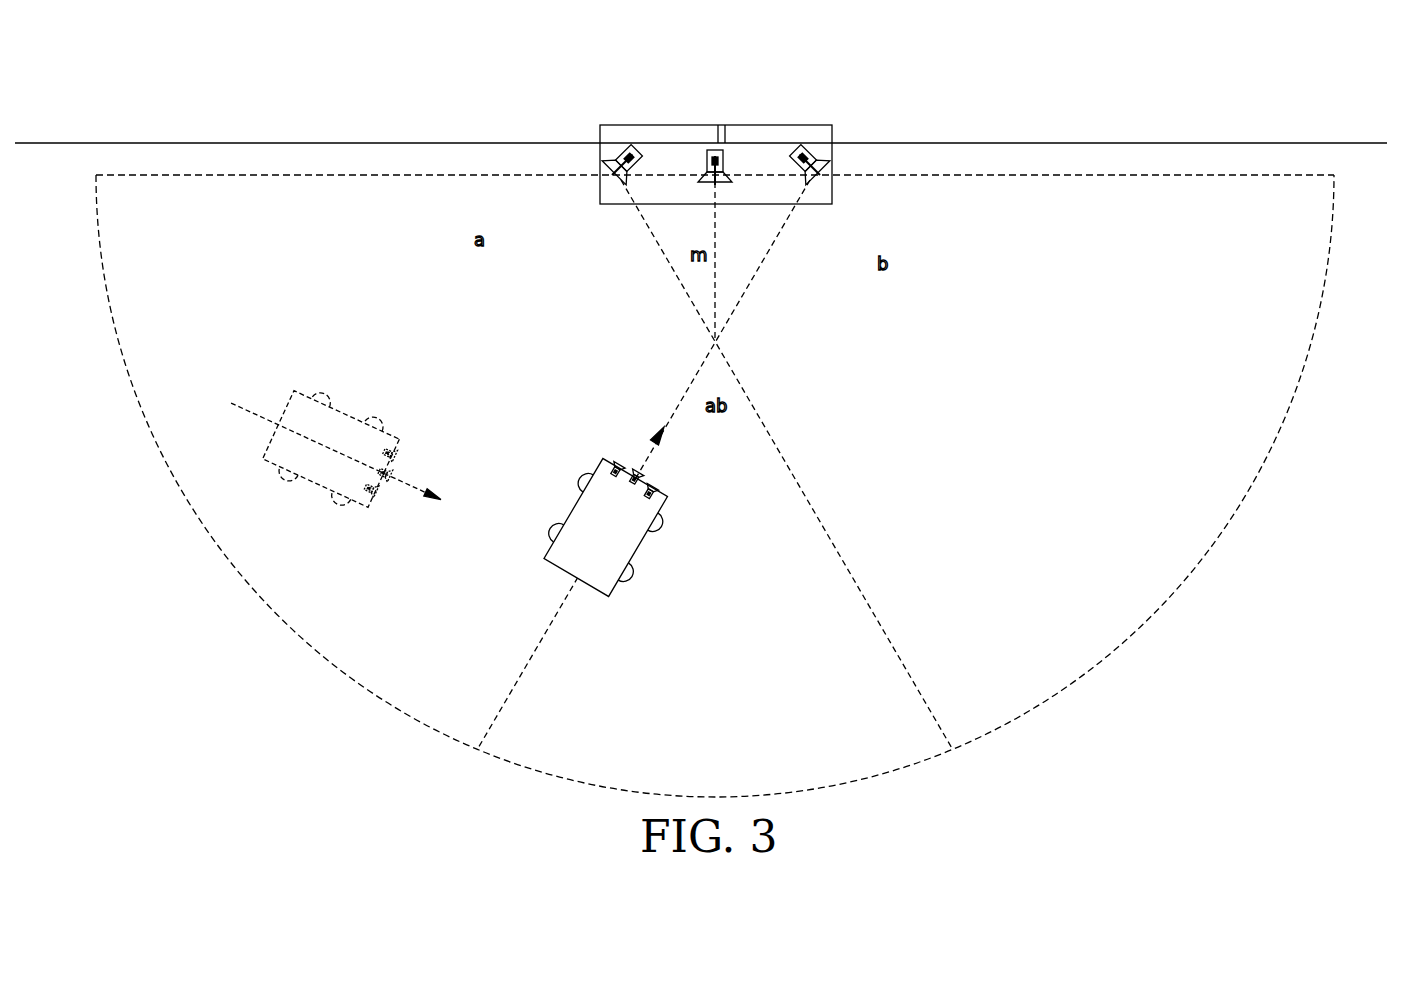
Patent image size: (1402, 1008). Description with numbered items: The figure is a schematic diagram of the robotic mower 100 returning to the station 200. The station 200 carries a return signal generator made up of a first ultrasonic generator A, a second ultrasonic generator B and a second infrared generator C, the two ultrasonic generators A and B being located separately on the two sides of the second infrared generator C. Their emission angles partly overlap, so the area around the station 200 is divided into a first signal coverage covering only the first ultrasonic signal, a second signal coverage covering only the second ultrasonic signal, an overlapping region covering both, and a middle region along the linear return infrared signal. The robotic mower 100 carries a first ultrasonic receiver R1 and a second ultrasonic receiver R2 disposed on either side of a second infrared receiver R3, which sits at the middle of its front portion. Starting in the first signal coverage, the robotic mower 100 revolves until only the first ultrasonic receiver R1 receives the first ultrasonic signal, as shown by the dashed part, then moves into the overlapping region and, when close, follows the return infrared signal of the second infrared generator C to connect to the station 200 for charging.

The station 200 is at (669, 141).
The robotic mower 100 is at (649, 519).
The first ultrasonic receiver R1 is at (614, 463).
The second ultrasonic receiver R2 is at (657, 487).
The second infrared receiver R3 is at (640, 463).
The first ultrasonic generator A is at (630, 162).
The second ultrasonic generator B is at (800, 162).
The second infrared generator C is at (716, 177).